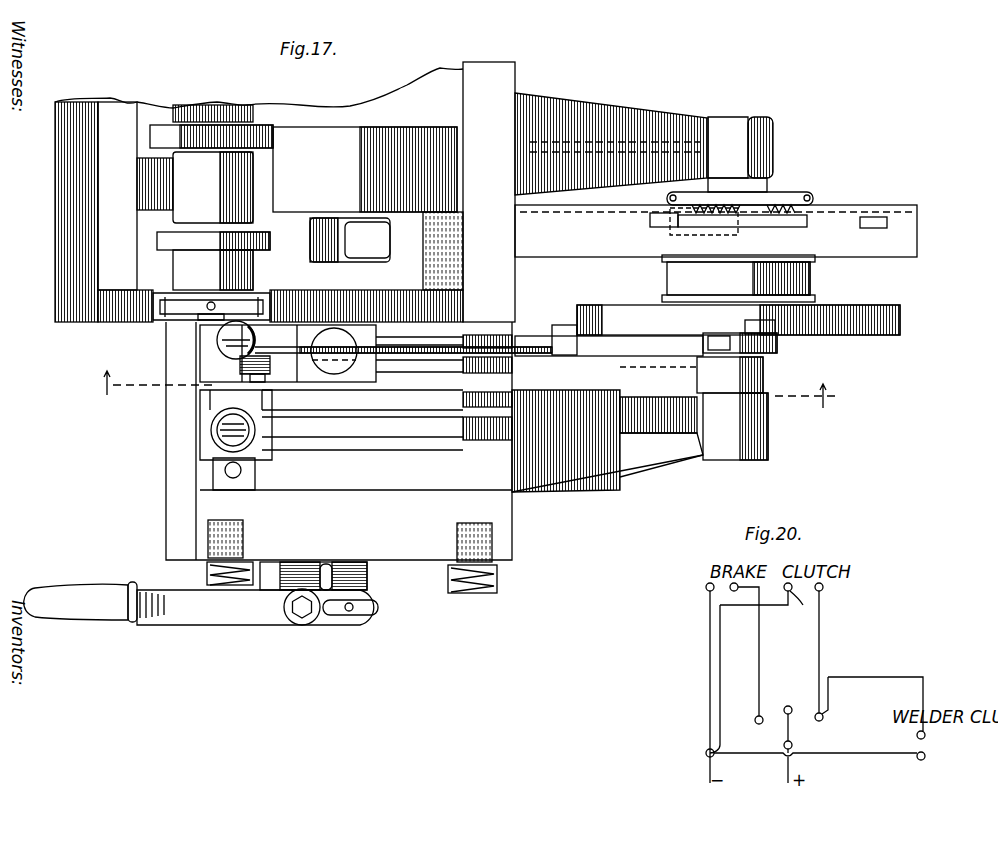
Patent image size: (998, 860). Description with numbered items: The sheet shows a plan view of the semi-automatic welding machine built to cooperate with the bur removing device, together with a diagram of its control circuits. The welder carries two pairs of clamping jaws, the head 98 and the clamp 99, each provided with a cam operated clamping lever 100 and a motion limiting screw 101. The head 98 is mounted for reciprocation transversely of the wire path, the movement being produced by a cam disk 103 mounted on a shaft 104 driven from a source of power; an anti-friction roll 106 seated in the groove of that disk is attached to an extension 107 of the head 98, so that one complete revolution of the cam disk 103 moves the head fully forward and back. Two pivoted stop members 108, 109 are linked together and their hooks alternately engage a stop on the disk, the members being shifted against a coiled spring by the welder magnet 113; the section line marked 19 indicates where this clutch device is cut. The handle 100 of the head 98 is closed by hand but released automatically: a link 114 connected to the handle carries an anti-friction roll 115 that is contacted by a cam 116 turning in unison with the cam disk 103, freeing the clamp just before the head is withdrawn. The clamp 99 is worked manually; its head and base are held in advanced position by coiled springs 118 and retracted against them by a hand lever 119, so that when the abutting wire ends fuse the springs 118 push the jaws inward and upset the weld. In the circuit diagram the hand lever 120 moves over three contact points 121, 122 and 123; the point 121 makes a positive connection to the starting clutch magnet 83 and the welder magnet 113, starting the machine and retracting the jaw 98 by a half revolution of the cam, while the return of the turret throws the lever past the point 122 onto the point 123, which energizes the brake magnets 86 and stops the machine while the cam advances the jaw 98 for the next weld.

In FIG. 17, the motion limiting screw 101 is at (333, 328).
In FIG. 17, the cam operated clamping lever 100 is at (217, 330).
In FIG. 17, the clamping jaw head 98 is at (210, 370).
In FIG. 17, the clamping jaw 99 is at (200, 400).
In FIG. 17, the link 114 is at (530, 338).
In FIG. 17, the section line 19 is at (466, 389).
In FIG. 17, the pivoted stop member 108 is at (716, 231).
In FIG. 17, the pivoted stop member 109 is at (653, 222).
In FIG. 17, the magnet 113 is at (702, 236).
In FIG. 20, the magnet 113 is at (927, 755).
In FIG. 17, the cam disk 103 is at (600, 305).
In FIG. 17, the extension 107 is at (562, 320).
In FIG. 17, the anti-friction roll 106 is at (618, 342).
In FIG. 17, the anti-friction roll 115 is at (772, 346).
In FIG. 17, the cam 116 is at (780, 335).
In FIG. 17, the shaft 104 is at (752, 366).
In FIG. 17, the coiled spring 118 is at (200, 568).
In FIG. 17, the hand lever 119 is at (224, 617).
In FIG. 20, the brake magnet 86 is at (706, 590).
In FIG. 20, the starting clutch magnet 83 is at (793, 611).
In FIG. 20, the contact point 123 is at (756, 718).
In FIG. 20, the contact point 122 is at (788, 712).
In FIG. 20, the contact point 121 is at (869, 661).
In FIG. 20, the hand lever 120 is at (791, 727).